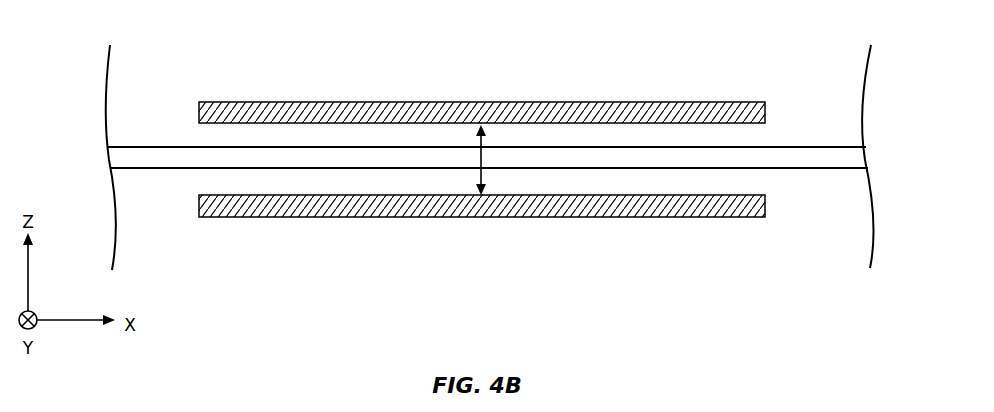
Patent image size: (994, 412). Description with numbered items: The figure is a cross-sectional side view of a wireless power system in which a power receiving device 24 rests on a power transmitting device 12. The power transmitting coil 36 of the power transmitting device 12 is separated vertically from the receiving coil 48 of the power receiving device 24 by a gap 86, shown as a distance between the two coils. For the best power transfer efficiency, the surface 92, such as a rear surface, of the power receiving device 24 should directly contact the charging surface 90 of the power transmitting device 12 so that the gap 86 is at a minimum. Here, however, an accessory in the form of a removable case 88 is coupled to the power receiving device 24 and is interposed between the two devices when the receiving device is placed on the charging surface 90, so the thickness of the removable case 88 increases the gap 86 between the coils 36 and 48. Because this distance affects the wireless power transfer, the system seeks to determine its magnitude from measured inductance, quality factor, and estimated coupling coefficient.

The power transmitting device 12 is at (863, 207).
The power receiving device 24 is at (857, 116).
The power transmitting coil 36 is at (481, 217).
The receiving coil 48 is at (481, 102).
The gap 86 is at (484, 157).
The removable case 88 is at (516, 168).
The charging surface 90 is at (133, 168).
The surface 92 is at (149, 146).